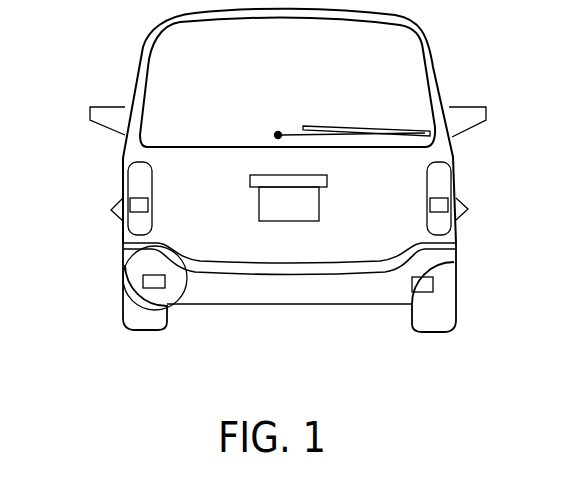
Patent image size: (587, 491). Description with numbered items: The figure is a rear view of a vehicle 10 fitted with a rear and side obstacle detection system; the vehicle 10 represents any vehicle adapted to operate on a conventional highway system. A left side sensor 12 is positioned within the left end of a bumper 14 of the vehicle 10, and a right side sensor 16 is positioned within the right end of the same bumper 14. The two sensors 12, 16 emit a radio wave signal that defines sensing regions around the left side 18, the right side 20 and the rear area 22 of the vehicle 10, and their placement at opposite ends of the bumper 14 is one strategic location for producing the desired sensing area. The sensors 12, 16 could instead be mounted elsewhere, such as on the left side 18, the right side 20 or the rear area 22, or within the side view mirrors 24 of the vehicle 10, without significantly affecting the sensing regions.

The vehicle 10 is at (449, 31).
The left side sensor 12 is at (164, 289).
The bumper 14 is at (290, 304).
The right side sensor 16 is at (413, 292).
The left side 18 is at (126, 172).
The right side 20 is at (456, 190).
The rear area 22 is at (170, 207).
The side view mirrors 24 is at (97, 105).